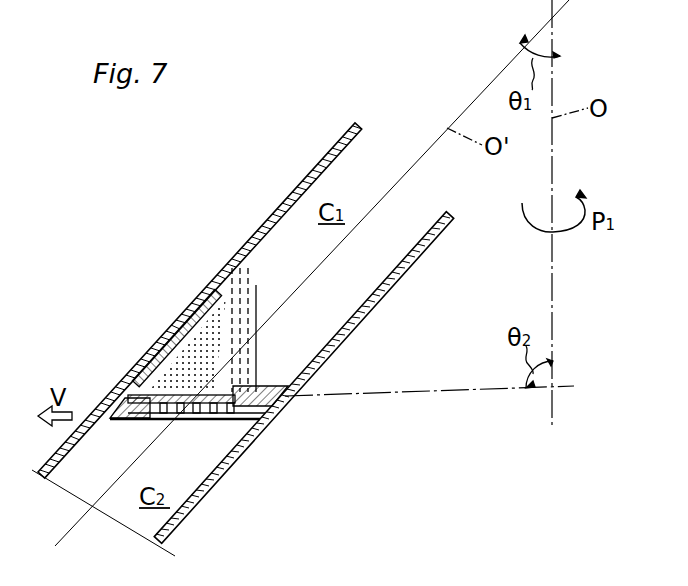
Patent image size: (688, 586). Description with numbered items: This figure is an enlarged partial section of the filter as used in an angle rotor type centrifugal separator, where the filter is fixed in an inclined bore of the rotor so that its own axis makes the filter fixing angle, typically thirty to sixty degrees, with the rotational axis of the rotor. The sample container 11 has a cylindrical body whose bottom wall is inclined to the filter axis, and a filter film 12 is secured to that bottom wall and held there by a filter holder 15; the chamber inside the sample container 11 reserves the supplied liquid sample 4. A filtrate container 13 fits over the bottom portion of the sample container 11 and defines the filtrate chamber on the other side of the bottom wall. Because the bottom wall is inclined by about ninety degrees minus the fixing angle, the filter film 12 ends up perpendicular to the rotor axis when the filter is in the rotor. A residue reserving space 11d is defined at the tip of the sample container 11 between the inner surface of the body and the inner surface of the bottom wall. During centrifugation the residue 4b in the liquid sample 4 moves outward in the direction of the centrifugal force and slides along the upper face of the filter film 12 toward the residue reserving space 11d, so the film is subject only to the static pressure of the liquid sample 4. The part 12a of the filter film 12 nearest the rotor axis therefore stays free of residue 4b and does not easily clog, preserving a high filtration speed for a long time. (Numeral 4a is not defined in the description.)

The liquid sample 4 is at (257, 312).
The drum upper portion 4a is at (228, 313).
The residue 4b is at (197, 345).
The sample container 11 is at (358, 272).
The residue reserving space 11d is at (150, 372).
The filter film 12 is at (172, 367).
The part of the filter film nearest the axis 12a is at (223, 385).
The filtrate container 13 is at (203, 490).
The filter holder 15 is at (247, 413).